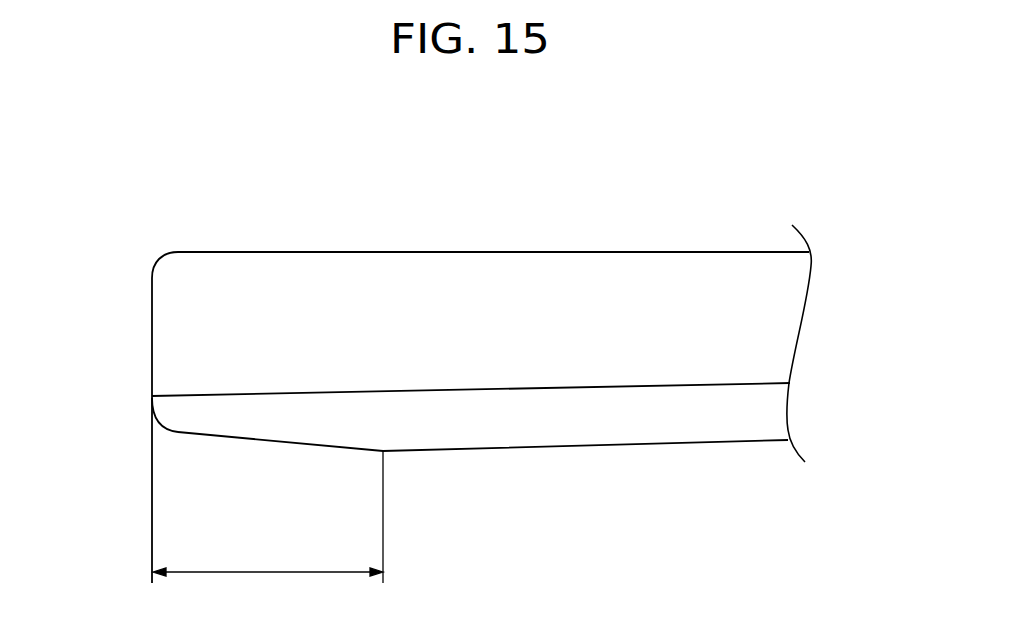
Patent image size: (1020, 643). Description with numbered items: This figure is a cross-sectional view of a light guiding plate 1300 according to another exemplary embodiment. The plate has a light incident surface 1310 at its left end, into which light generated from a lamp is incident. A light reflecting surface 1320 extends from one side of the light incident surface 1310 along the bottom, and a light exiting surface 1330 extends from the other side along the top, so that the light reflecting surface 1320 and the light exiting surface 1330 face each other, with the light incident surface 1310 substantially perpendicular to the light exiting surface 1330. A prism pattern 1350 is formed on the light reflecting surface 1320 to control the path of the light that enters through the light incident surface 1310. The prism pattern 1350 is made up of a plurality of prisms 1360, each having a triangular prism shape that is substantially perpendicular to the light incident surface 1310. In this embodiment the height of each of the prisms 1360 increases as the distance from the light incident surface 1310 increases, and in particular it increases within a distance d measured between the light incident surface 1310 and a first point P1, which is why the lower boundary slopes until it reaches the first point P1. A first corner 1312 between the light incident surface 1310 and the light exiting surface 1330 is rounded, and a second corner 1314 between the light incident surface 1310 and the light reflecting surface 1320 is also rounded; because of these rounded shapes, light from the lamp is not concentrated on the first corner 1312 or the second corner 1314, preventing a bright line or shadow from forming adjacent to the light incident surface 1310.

The light guiding plate 1300 is at (570, 193).
The light incident surface 1310 is at (152, 340).
The first corner 1312 is at (155, 262).
The second corner 1314 is at (157, 427).
The light reflecting surface 1320 is at (488, 450).
The light exiting surface 1330 is at (443, 252).
The prism pattern 1350 is at (582, 427).
The prisms 1360 is at (765, 413).
The first point P1 is at (383, 451).
The distance d is at (268, 583).